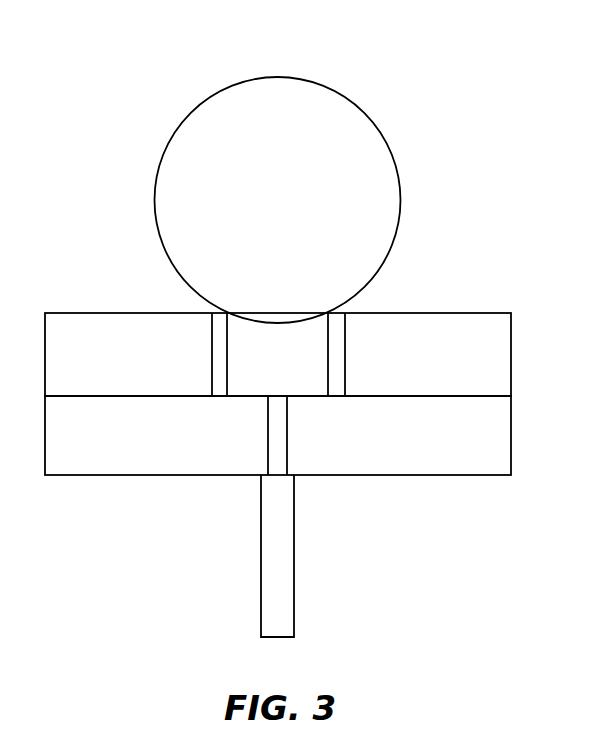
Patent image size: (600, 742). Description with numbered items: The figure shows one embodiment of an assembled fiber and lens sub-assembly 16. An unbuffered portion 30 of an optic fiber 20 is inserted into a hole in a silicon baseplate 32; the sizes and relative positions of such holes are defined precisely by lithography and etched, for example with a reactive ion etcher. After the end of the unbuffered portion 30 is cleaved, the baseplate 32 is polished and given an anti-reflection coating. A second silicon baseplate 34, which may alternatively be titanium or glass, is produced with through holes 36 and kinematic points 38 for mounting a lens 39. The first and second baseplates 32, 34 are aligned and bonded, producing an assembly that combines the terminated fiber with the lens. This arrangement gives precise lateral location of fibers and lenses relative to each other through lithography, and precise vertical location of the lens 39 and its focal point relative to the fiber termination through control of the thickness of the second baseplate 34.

The sub-assembly 16 is at (444, 101).
The optic fiber 20 is at (290, 605).
The unbuffered portion 30 is at (285, 440).
The silicon baseplate 32 is at (505, 450).
The second silicon baseplate 34 is at (505, 365).
The through holes 36 is at (291, 377).
The kinematic points 38 is at (212, 366).
The lens 39 is at (396, 190).